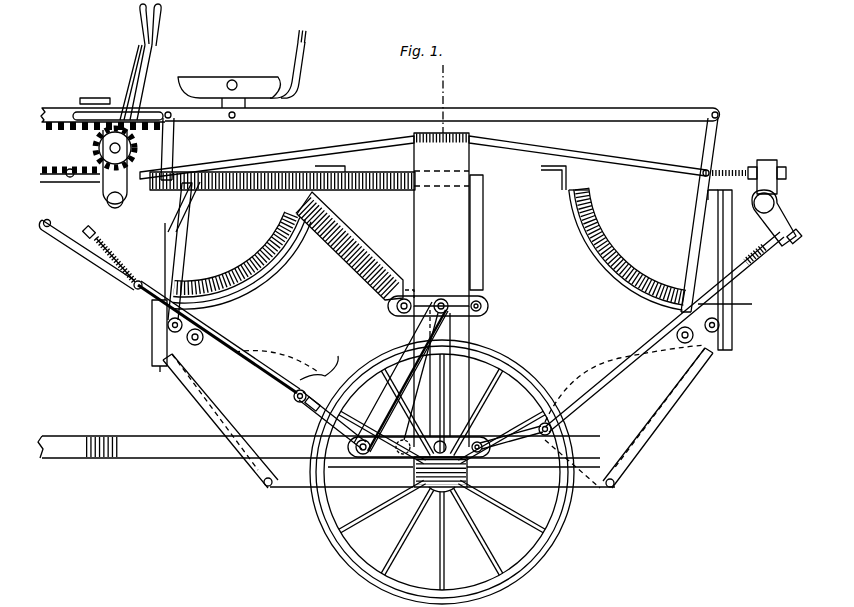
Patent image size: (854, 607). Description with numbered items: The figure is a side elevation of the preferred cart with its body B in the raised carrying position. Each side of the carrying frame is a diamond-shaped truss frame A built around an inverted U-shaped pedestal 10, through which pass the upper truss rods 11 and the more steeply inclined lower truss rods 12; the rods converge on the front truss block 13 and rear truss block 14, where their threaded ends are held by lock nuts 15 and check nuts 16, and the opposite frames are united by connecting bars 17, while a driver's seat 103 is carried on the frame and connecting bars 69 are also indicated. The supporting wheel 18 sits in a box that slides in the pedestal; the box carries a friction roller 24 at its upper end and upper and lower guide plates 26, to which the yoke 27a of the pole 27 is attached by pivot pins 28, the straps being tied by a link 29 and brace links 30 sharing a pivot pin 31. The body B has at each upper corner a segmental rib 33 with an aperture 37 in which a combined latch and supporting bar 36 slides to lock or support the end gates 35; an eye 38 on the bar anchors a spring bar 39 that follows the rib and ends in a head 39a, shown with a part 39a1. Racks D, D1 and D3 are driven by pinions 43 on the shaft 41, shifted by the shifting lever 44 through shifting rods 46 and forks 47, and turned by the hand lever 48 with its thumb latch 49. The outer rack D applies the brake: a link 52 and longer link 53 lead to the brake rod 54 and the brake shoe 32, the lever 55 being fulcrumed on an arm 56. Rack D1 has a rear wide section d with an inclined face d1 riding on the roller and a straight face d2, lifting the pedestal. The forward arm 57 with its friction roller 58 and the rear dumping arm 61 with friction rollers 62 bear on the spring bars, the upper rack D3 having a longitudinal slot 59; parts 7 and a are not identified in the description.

The central post 7 is at (441, 275).
The pedestal 10 is at (440, 291).
The upper truss rods 11 is at (443, 156).
The lower truss rods 12 is at (266, 364).
The front truss block 13 is at (115, 167).
The rear truss block 14 is at (778, 202).
The lock nuts 15 is at (84, 226).
The check nuts 16 is at (108, 268).
The connecting bars 17 is at (124, 200).
The supporting wheels 18 is at (540, 548).
The friction roller 24 is at (398, 312).
The guide plates 26 is at (486, 306).
The pole 27 is at (319, 435).
The yoke 27a is at (209, 449).
The pivot pins 28 is at (440, 440).
The link 29 is at (440, 374).
The brace links 30 is at (372, 396).
The pivot pin 31 is at (443, 298).
The brake shoe 32 is at (422, 396).
The segmental rib 33 is at (429, 246).
The end gates 35 is at (200, 398).
The combined latch and supporting bars 36 is at (180, 262).
The aperture 37 is at (732, 306).
The eye 38 is at (166, 327).
The spring bar 39 is at (284, 284).
The head 39a is at (346, 166).
The guide bracket 39a1 is at (541, 178).
The shaft 41 is at (144, 157).
The pinions 43 is at (149, 145).
The shifting lever 44 is at (95, 90).
The shifting rods 46 is at (60, 166).
The forks 47 is at (90, 132).
The hand lever 48 is at (150, 70).
The thumb latch 49 is at (134, 58).
The link 52 is at (49, 188).
The longer link 53 is at (80, 256).
The brake rod 54 is at (252, 366).
The lever 55 is at (244, 196).
The arm 56 is at (177, 154).
The arm 57 is at (195, 230).
The friction roller 58 is at (196, 345).
The longitudinal slot 59 is at (152, 110).
The dumping arm 61 is at (714, 170).
The friction rollers 62 is at (685, 345).
The connecting bars 69 is at (642, 109).
The driver's seat 103 is at (242, 72).
The truss frames A is at (470, 383).
The body B is at (545, 278).
The outer rack D is at (86, 148).
The adjusting rack D1 is at (240, 207).
The upper dumping rack D3 is at (103, 107).
The link a is at (207, 136).
The rear wide section d is at (484, 234).
The forward lower inclined face d1 is at (350, 246).
The rear lower straight face d2 is at (404, 290).